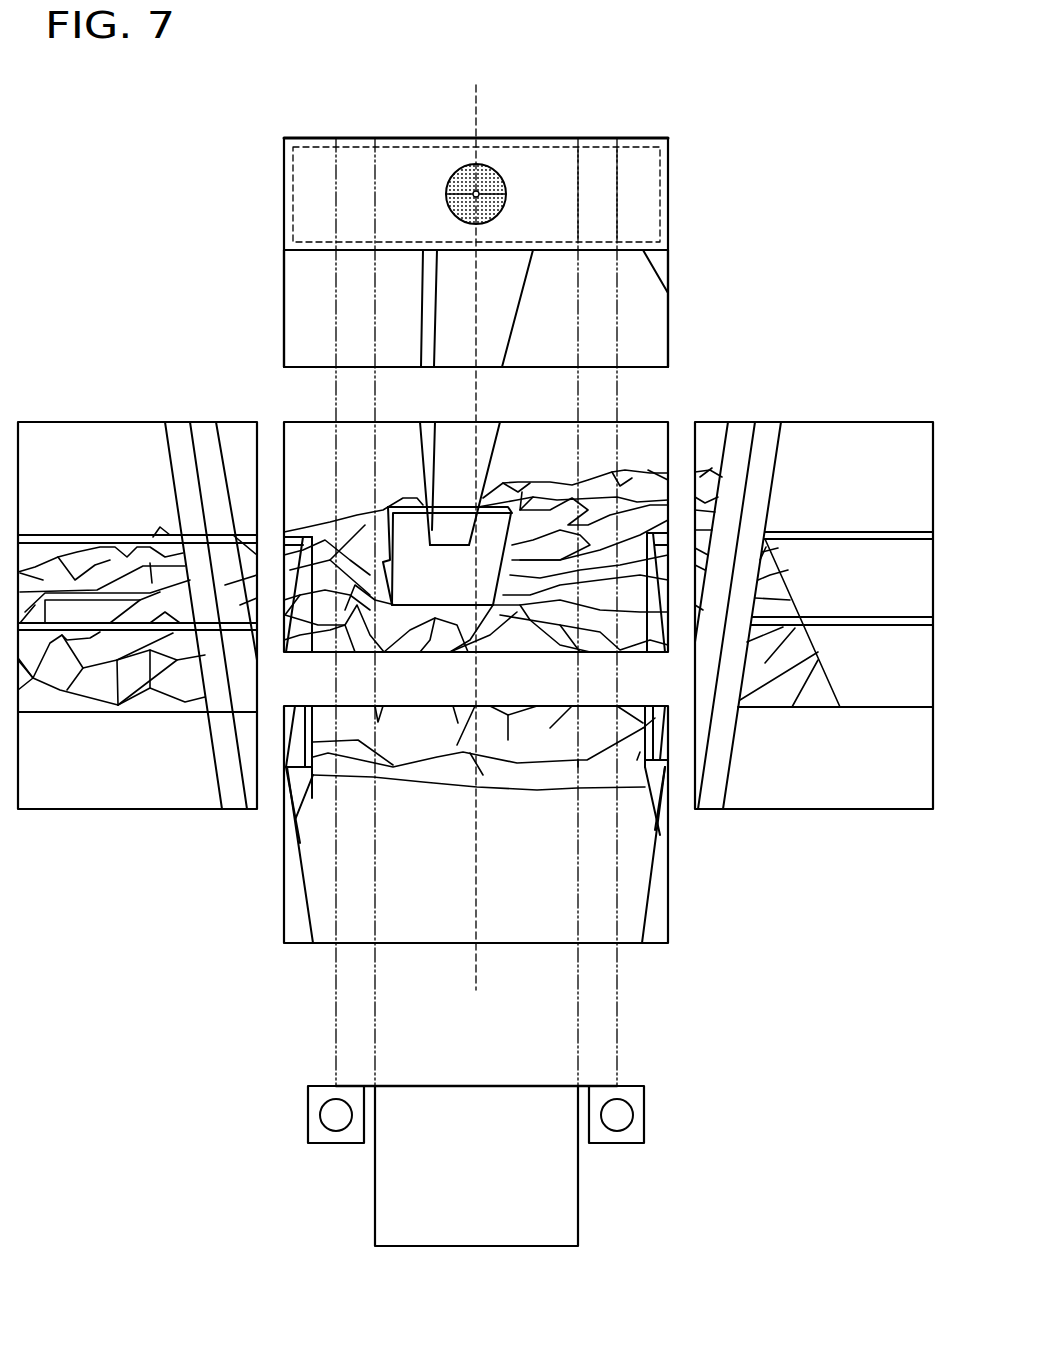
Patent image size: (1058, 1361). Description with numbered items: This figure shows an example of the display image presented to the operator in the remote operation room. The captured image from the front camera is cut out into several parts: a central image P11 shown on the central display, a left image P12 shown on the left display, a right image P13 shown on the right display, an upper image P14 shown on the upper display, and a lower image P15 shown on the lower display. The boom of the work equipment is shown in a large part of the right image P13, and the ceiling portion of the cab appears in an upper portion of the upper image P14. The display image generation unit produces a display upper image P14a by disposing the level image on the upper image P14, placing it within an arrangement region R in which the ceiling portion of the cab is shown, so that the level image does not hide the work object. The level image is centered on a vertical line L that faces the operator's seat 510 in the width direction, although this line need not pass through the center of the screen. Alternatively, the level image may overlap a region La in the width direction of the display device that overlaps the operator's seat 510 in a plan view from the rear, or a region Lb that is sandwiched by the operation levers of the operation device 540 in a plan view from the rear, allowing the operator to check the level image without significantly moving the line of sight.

The central image P11 is at (448, 174).
The vertical line L is at (479, 109).
The arrangement region R is at (637, 147).
The region La is at (580, 176).
The region Lb is at (618, 223).
The upper image P14 is at (392, 252).
The display upper image P14a is at (284, 285).
The left image P12 is at (128, 422).
The right image P13 is at (809, 422).
The lower image P15 is at (284, 903).
The operator's seat 510 is at (375, 1222).
The operation device 540 is at (320, 1114).